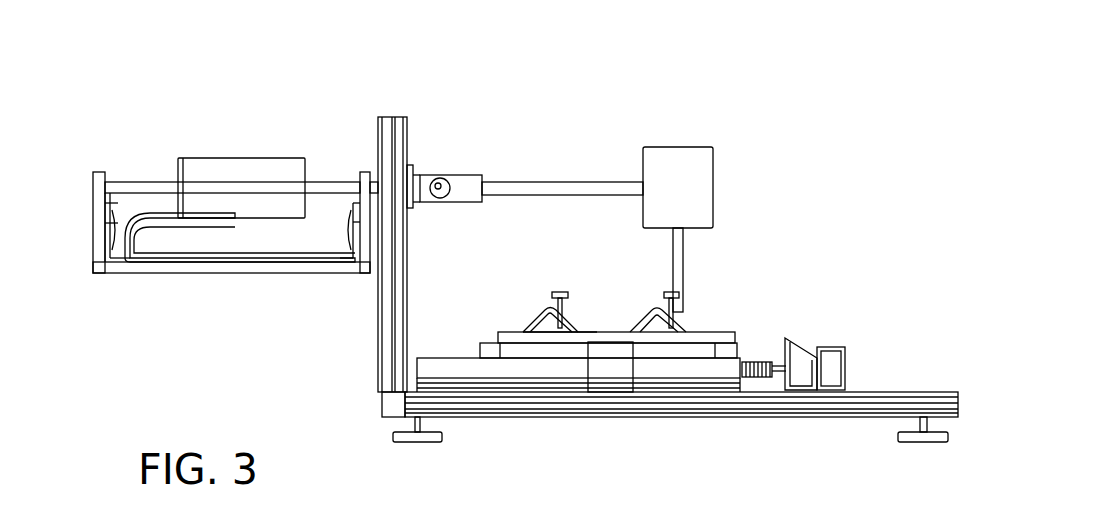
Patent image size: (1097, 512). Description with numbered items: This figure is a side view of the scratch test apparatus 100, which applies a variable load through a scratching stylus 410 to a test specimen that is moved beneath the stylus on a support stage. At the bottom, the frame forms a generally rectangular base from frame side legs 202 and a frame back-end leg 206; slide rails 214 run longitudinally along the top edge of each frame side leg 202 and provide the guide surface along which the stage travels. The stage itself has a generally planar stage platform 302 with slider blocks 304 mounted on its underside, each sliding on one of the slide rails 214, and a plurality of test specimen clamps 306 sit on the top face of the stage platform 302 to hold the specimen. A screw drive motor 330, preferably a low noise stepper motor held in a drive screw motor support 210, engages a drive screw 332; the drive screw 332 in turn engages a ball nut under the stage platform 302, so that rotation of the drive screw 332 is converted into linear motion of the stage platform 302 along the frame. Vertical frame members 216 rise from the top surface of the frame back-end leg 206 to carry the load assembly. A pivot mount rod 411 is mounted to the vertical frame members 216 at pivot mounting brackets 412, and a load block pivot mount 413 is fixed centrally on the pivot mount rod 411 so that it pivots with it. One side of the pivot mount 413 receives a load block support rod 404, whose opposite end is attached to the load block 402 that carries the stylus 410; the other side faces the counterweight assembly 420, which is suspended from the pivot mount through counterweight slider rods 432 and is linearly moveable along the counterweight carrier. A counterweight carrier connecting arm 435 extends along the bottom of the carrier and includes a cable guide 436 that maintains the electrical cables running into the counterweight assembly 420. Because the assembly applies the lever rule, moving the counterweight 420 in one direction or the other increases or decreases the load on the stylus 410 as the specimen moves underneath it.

The scratch test apparatus 100 is at (717, 108).
The frame side legs 202 is at (822, 418).
The frame back-end leg 206 is at (382, 404).
The drive screw motor support 210 is at (803, 362).
The slide rails 214 is at (538, 380).
The vertical frame members 216 is at (401, 117).
The stage platform 302 is at (502, 333).
The slider blocks 304 is at (620, 380).
The test specimen clamps 306 is at (665, 320).
The screw drive motor 330 is at (838, 368).
The drive screw 332 is at (750, 362).
The load block 402 is at (700, 175).
The load block support rod 404 is at (573, 184).
The scratching stylus 410 is at (683, 265).
The pivot mount rod 411 is at (448, 196).
The pivot mounting brackets 412 is at (414, 192).
The load block pivot mount 413 is at (464, 175).
The counterweight assembly 420 is at (244, 178).
The counterweight slider rods 432 is at (157, 182).
The counterweight carrier connecting arm 435 is at (246, 270).
The cable guide 436 is at (138, 262).